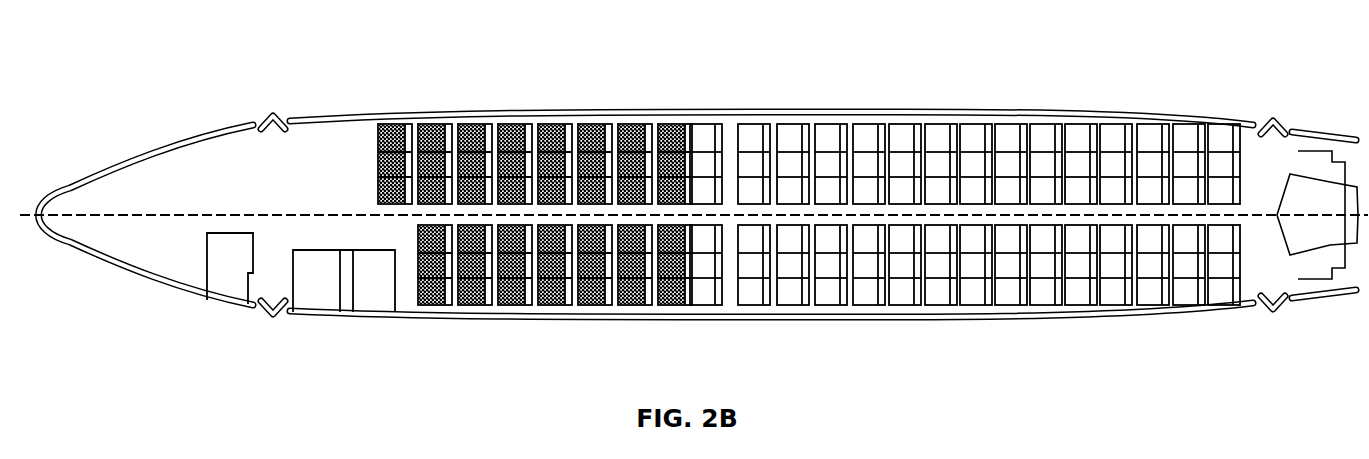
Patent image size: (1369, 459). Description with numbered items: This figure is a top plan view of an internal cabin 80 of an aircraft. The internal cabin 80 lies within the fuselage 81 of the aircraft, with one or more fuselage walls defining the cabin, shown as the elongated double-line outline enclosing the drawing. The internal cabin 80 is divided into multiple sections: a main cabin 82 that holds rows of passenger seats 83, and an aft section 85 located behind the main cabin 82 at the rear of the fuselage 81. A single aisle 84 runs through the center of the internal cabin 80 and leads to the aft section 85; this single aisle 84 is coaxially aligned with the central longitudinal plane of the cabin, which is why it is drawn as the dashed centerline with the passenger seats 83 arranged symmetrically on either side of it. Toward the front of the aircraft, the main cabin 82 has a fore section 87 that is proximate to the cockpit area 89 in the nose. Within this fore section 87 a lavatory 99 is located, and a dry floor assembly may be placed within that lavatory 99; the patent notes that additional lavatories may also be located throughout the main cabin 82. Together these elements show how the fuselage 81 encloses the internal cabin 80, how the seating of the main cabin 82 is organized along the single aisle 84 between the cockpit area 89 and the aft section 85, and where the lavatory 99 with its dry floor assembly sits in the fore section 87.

The internal cabin 80 is at (291, 54).
The fuselage 81 is at (497, 115).
The main cabin 82 is at (435, 137).
The passenger seats 83 is at (705, 143).
The single aisle 84 is at (828, 208).
The aft section 85 is at (1257, 148).
The fore section 87 is at (353, 160).
The cockpit area 89 is at (175, 165).
The lavatory 99 is at (347, 293).